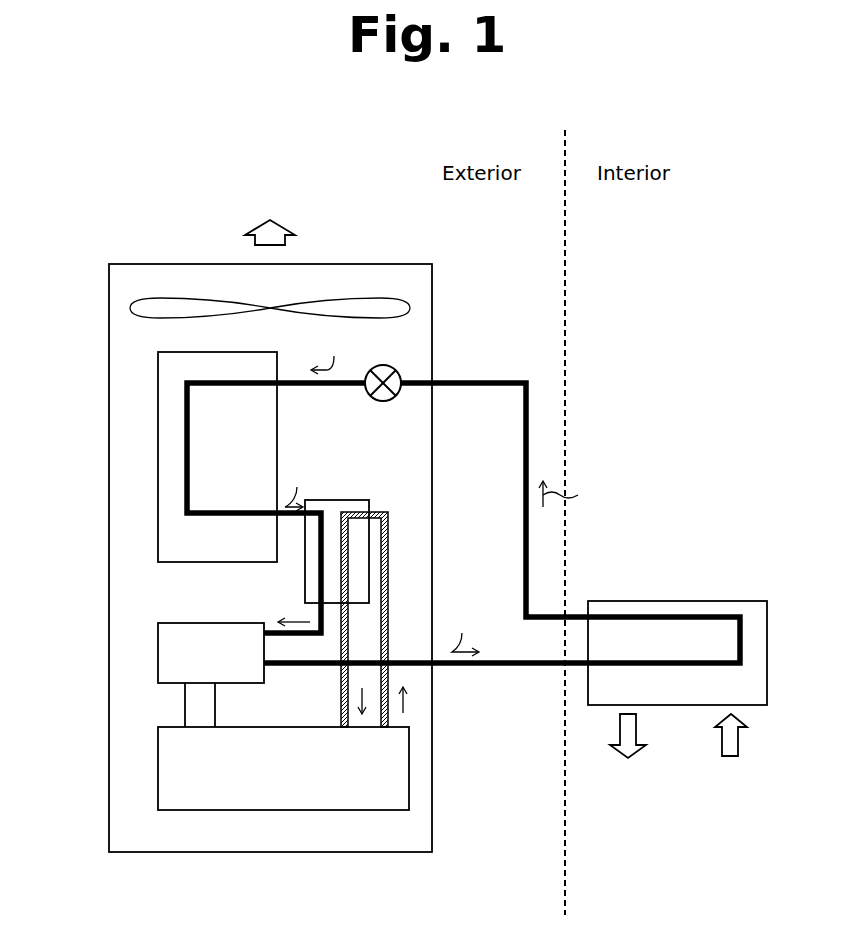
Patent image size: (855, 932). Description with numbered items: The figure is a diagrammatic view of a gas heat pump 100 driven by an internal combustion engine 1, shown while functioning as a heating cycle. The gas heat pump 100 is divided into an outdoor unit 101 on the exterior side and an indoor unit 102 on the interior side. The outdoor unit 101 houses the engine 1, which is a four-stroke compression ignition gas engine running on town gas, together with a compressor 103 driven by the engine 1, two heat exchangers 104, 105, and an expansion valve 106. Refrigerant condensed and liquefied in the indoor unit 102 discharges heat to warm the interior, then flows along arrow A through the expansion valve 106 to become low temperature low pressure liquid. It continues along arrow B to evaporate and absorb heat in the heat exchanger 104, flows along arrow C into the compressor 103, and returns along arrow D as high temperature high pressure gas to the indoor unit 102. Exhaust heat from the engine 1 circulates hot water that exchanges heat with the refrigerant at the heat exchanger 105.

The internal combustion engine 1 is at (293, 811).
The gas heat pump 100 is at (385, 153).
The outdoor unit 101 is at (148, 264).
The indoor unit 102 is at (718, 601).
The compressor 103 is at (158, 655).
The heat exchanger 104 is at (158, 538).
The heat exchanger 105 is at (364, 500).
The expansion valve 106 is at (400, 355).